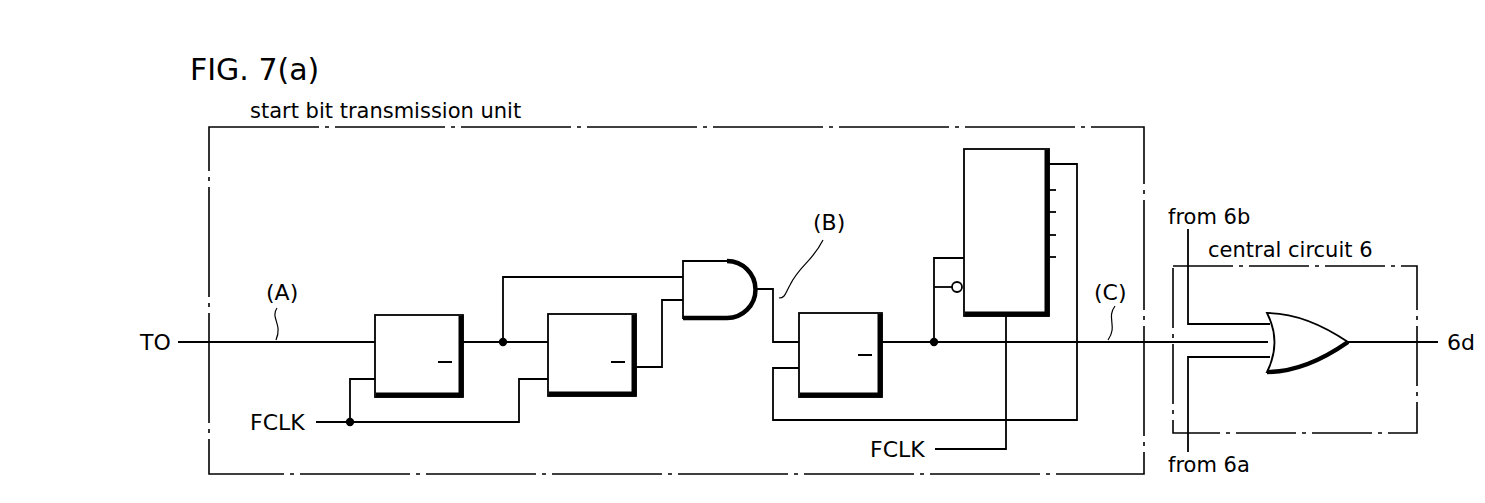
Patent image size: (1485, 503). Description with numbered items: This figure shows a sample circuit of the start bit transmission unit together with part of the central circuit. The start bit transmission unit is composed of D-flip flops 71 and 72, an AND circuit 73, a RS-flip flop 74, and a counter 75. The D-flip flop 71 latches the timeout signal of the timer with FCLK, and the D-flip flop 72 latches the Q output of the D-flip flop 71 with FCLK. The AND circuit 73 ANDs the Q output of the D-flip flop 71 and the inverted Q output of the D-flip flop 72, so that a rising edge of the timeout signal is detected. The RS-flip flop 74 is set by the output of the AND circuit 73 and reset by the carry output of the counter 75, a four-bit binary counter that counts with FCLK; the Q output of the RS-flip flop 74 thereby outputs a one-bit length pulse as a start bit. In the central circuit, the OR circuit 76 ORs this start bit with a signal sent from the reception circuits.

The D-flip flop 71 is at (428, 315).
The D-flip flop 72 is at (594, 310).
The AND circuit 73 is at (718, 261).
The RS-flip flop 74 is at (850, 313).
The counter 75 is at (1040, 150).
The OR circuit 76 is at (1330, 320).